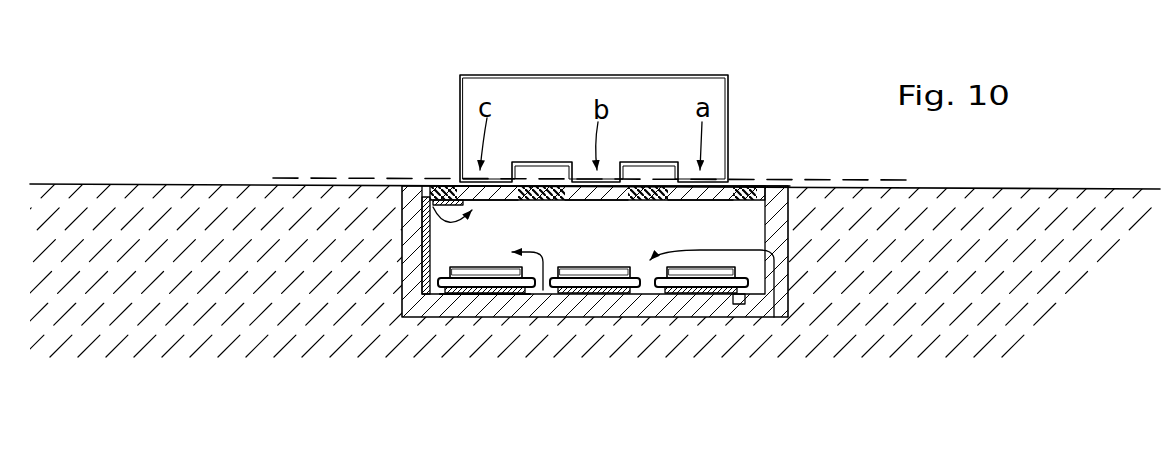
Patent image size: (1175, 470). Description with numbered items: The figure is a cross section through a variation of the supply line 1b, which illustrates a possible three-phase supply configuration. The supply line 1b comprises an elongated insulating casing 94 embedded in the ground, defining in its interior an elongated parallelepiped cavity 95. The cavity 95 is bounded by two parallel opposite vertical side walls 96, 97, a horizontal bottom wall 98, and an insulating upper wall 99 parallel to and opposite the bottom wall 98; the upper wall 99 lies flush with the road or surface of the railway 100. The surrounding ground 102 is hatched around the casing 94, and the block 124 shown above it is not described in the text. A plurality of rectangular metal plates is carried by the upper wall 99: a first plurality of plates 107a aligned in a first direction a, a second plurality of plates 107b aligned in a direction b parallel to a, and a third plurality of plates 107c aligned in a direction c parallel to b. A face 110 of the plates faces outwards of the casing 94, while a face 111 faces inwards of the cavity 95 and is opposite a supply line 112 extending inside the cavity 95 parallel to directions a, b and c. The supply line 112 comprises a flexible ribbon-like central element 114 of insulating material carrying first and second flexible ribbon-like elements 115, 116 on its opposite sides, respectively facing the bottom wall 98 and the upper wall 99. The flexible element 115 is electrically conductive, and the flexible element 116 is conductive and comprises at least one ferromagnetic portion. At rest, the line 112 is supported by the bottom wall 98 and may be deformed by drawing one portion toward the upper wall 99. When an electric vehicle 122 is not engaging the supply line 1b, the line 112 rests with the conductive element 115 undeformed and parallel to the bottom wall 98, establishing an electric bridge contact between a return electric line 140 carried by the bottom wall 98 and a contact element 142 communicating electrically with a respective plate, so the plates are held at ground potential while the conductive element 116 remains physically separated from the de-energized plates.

The supply line 1b is at (767, 88).
The elongated insulating casing 94 is at (767, 174).
The elongated parallelepiped cavity 95 is at (427, 196).
The vertical side wall 96 is at (400, 228).
The vertical side wall 97 is at (781, 237).
The horizontal bottom wall 98 is at (635, 310).
The insulating upper wall 99 is at (647, 193).
The railway 100 is at (270, 195).
The ground 102 is at (182, 196).
The first plurality of plates 107a is at (695, 198).
The second plurality of plates 107b is at (590, 198).
The third plurality of plates 107c is at (495, 199).
The face 110 is at (493, 184).
The face 111 is at (487, 206).
The supply line 112 is at (543, 290).
The flexible ribbon-like central element 114 is at (485, 280).
The first flexible ribbon-like element 115 is at (463, 293).
The second flexible ribbon-like element 116 is at (430, 290).
The electric vehicle 122 is at (932, 177).
The test body 124 is at (608, 67).
The return electric line 140 is at (520, 280).
The contact element 142 is at (450, 296).